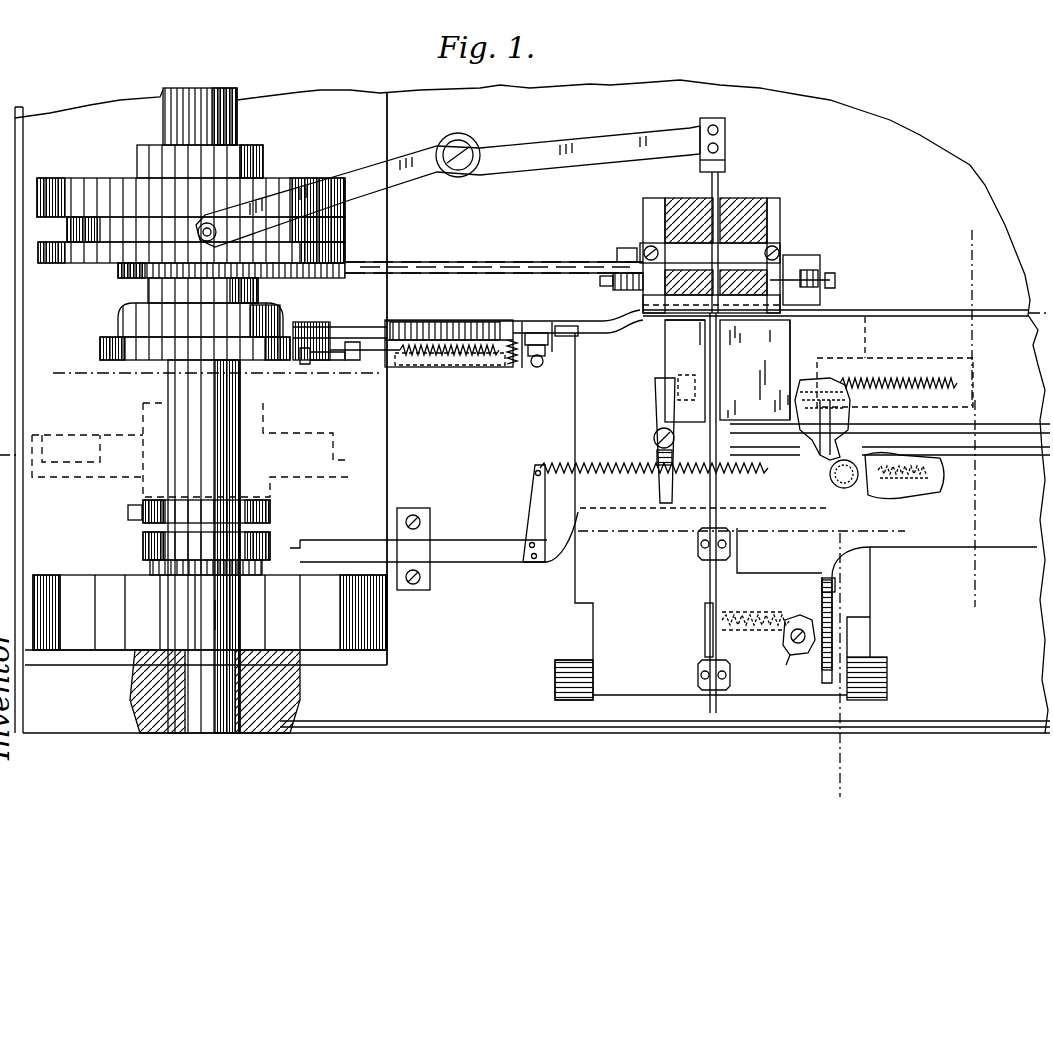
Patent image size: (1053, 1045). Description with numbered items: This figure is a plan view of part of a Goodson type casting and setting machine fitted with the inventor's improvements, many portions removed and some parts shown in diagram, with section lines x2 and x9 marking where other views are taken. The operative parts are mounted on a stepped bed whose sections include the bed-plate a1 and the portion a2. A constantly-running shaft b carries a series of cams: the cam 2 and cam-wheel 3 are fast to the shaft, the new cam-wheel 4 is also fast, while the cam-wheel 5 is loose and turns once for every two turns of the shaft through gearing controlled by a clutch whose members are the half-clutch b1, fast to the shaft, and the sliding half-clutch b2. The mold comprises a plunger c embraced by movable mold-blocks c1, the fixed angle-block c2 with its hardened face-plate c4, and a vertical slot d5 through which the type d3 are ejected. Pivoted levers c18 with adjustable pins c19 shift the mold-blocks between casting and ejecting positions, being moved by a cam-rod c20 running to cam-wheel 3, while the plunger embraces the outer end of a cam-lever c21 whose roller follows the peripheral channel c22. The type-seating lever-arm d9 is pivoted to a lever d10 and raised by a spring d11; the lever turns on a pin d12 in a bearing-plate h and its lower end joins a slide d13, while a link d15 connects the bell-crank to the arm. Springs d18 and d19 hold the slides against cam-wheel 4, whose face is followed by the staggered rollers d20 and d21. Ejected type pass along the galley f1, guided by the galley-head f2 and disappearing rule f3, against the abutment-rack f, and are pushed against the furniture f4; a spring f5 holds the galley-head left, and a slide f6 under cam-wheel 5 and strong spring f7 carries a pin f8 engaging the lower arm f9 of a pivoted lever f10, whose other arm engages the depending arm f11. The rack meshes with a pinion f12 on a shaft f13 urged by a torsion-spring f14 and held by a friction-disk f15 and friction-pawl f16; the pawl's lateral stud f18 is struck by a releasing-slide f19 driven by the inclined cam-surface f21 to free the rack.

The cam 2 is at (118, 318).
The cam-wheel 3 is at (78, 180).
The cam-wheel 4 is at (100, 350).
The cam-wheel 5 is at (100, 590).
The shaft b is at (170, 386).
The half-clutch b1 is at (270, 514).
The half-clutch b2 is at (270, 535).
The plunger c is at (719, 185).
The mold-blocks c1 is at (688, 205).
The angle-block c2 is at (780, 218).
The hardened face-plate c4 is at (660, 200).
The pivoted levers c18 is at (805, 268).
The adjustable pins c19 is at (786, 280).
The cam-rod c20 is at (485, 266).
The cam-lever c21 is at (580, 155).
The peripheral channel c22 is at (196, 228).
The type d3 is at (689, 334).
The vertical slot d5 is at (685, 369).
The lever-arm d9 is at (635, 318).
The lever d10 is at (554, 361).
The spring d11 is at (555, 335).
The pin d12 is at (538, 322).
The slide d13 is at (352, 328).
The link d15 is at (568, 325).
The spring d18 is at (452, 355).
The spring d19 is at (510, 368).
The roller d20 is at (310, 330).
The roller d21 is at (325, 358).
The bearing-plate h is at (500, 330).
The bed-plate a1 is at (415, 379).
The bed section a2 is at (701, 516).
The abutment-rack f is at (705, 570).
The galley f1 is at (885, 330).
The galley-head f2 is at (665, 362).
The disappearing rule f3 is at (700, 350).
The furniture f4 is at (780, 365).
The spring f5 is at (975, 388).
The slide f6 is at (485, 540).
The spring f7 is at (562, 468).
The pin f8 is at (705, 495).
The lower arm f9 is at (741, 516).
The pivoted lever f10 is at (655, 440).
The depending arm f11 is at (678, 395).
The pinion f12 is at (718, 615).
The shaft f13 is at (793, 655).
The torsion-spring f14 is at (800, 628).
The friction-disk f15 is at (832, 612).
The friction-pawl f16 is at (822, 580).
The lateral stud f18 is at (838, 590).
The releasing-slide f19 is at (836, 422).
The inclined cam-surface f21 is at (890, 440).
The section line x2 is at (551, 334).
The section line x9 is at (897, 513).